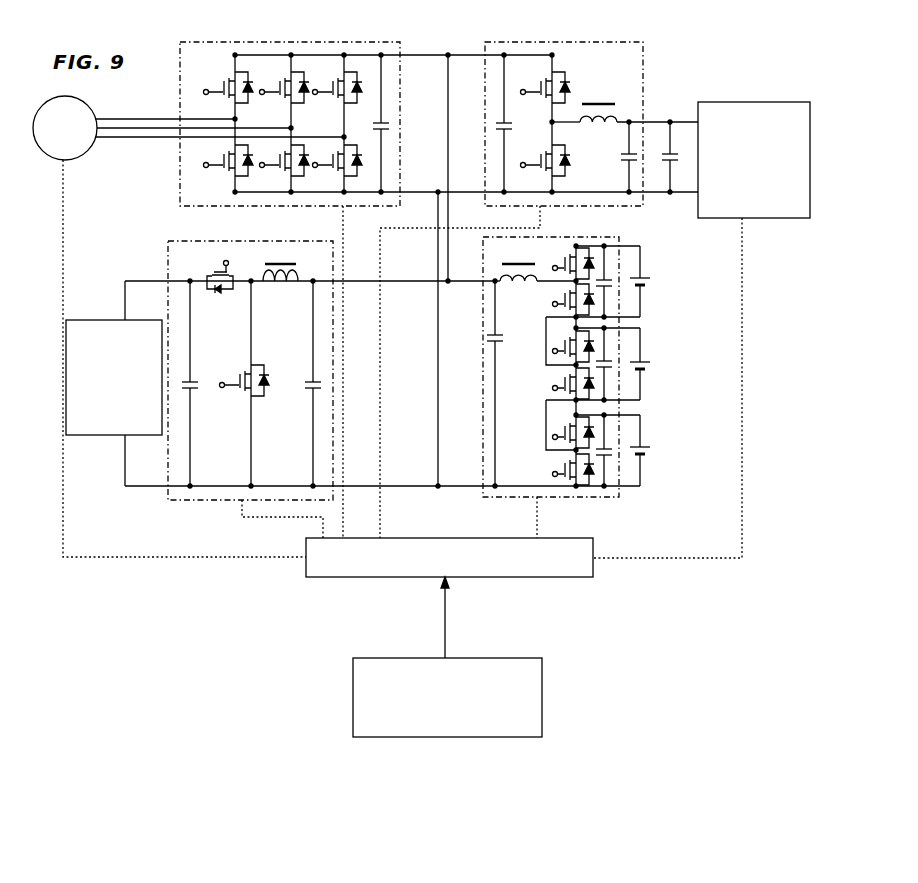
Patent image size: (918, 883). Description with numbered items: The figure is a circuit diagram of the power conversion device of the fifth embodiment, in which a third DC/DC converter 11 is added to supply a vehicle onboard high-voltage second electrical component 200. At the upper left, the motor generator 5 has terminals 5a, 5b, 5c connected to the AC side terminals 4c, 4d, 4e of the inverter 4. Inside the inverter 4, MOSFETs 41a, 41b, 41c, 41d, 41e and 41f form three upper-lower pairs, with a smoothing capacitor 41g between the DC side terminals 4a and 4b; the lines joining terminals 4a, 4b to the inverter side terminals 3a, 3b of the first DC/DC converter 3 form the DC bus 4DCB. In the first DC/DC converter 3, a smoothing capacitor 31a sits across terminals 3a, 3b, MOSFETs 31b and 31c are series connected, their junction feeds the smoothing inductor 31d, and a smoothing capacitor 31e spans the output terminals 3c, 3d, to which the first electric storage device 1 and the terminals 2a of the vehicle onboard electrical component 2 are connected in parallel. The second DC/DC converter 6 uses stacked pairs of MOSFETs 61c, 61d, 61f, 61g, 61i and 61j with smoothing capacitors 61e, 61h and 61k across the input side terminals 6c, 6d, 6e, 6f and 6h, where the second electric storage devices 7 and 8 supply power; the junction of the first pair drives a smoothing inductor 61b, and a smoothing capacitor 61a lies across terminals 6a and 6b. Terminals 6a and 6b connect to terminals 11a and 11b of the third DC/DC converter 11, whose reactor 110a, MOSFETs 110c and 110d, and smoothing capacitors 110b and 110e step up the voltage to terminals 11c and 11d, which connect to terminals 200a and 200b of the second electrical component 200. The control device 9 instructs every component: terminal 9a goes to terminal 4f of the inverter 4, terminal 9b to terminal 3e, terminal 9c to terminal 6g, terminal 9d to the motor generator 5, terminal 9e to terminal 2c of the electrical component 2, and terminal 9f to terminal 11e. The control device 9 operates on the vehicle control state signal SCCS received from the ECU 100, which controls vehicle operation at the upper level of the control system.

The motor generator 5 is at (66, 96).
The motor generator terminal 5a is at (101, 116).
The motor generator terminal 5b is at (102, 140).
The motor generator terminal 5c is at (96, 150).
The inverter 4 is at (300, 42).
The DC side terminal 4a is at (401, 58).
The DC side terminal 4b is at (400, 190).
The AC side terminal 4c is at (180, 118).
The AC side terminal 4d is at (180, 128).
The AC side terminal 4e is at (180, 137).
The inverter control terminal 4f is at (342, 208).
The DC bus 4DCB is at (436, 54).
The MOSFET 41a is at (222, 86).
The MOSFET 41b is at (222, 159).
The MOSFET 41c is at (278, 86).
The MOSFET 41d is at (278, 159).
The MOSFET 41e is at (333, 86).
The MOSFET 41f is at (333, 159).
The smoothing capacitor 41g is at (370, 126).
The first DC/DC converter 3 is at (556, 42).
The inverter side terminal 3a is at (484, 58).
The inverter side terminal 3b is at (484, 190).
The first DC/DC converter terminal 3c is at (645, 120).
The first DC/DC converter terminal 3d is at (640, 206).
The first DC/DC converter control terminal 3e is at (538, 208).
The smoothing capacitor 31a is at (508, 122).
The MOSFET 31b is at (540, 86).
The MOSFET 31c is at (540, 160).
The smoothing inductor 31d is at (601, 102).
The smoothing capacitor 31e is at (621, 157).
The first electric storage device 1 is at (666, 157).
The vehicle onboard electrical component 2 is at (740, 102).
The electrical component terminal 2a is at (696, 121).
The electrical component control terminal 2c is at (742, 226).
The second electrical component 200 is at (66, 370).
The second electrical component terminal 200a is at (122, 318).
The second electrical component terminal 200b is at (120, 437).
The third DC/DC converter 11 is at (250, 241).
The third DC/DC converter terminal 11a is at (333, 281).
The third DC/DC converter terminal 11b is at (330, 489).
The third DC/DC converter terminal 11c is at (167, 281).
The third DC/DC converter terminal 11d is at (166, 499).
The third DC/DC converter control terminal 11e is at (242, 504).
The reactor 110a is at (275, 283).
The smoothing capacitor 110b is at (305, 385).
The MOSFET 110c is at (244, 378).
The MOSFET 110d is at (208, 276).
The smoothing capacitor 110e is at (194, 389).
The second DC/DC converter 6 is at (562, 237).
The second DC/DC converter terminal 6a is at (483, 281).
The second DC/DC converter terminal 6b is at (483, 496).
The input side terminal 6c is at (623, 246).
The input side terminal 6d is at (643, 317).
The input side terminal 6e is at (641, 328).
The input side terminal 6f is at (643, 400).
The second DC/DC converter terminal 6g is at (641, 415).
The second DC/DC converter terminal 6h is at (630, 497).
The smoothing capacitor 61a is at (498, 338).
The smoothing inductor 61b is at (513, 277).
The MOSFET 61c is at (566, 265).
The MOSFET 61d is at (566, 301).
The smoothing capacitor 61e is at (612, 285).
The MOSFET 61f is at (566, 348).
The MOSFET 61g is at (566, 385).
The smoothing capacitor 61h is at (612, 366).
The MOSFET 61i is at (566, 434).
The MOSFET 61j is at (566, 471).
The smoothing capacitor 61k is at (612, 454).
The second electric storage device 7 is at (646, 280).
The second electric storage device 8 is at (646, 365).
The control device 9 is at (590, 538).
The control device terminal 9a is at (343, 534).
The control device terminal 9b is at (382, 534).
The control device terminal 9c is at (540, 534).
The control device terminal 9d is at (305, 560).
The control device terminal 9e is at (594, 560).
The control device terminal 9f is at (320, 537).
The ECU 100 is at (484, 657).
The vehicle control state signal SCCS is at (451, 617).